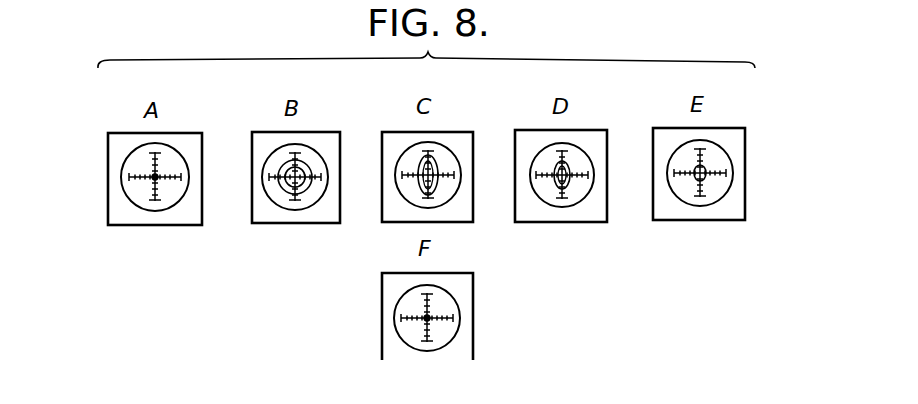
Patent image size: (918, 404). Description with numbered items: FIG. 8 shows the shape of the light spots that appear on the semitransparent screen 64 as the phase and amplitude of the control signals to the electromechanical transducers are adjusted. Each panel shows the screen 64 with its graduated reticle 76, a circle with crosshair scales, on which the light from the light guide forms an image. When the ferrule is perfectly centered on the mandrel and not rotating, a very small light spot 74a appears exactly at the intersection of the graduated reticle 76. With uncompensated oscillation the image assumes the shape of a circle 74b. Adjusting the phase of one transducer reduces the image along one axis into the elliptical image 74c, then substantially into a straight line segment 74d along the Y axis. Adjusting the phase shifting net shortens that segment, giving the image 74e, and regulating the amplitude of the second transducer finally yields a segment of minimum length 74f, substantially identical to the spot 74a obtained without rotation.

The semitransparent screen 64 is at (125, 133).
The light spot 74a is at (155, 177).
The circle 74b is at (290, 188).
The elliptical image 74c is at (438, 165).
The straight line segment 74d is at (573, 164).
The image 74e is at (706, 168).
The segment of minimum length 74f is at (427, 318).
The graduated reticle 76 is at (172, 196).